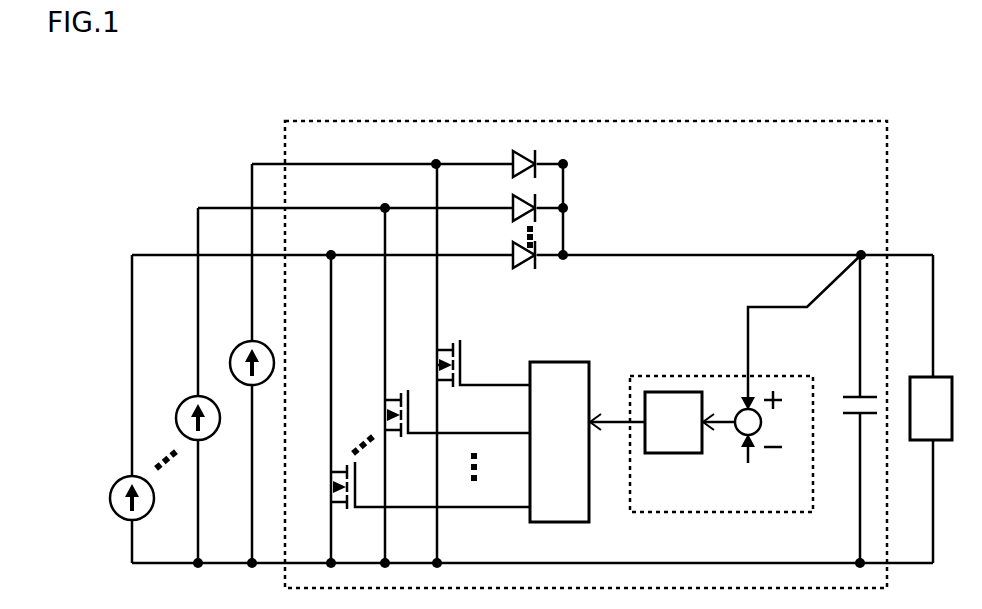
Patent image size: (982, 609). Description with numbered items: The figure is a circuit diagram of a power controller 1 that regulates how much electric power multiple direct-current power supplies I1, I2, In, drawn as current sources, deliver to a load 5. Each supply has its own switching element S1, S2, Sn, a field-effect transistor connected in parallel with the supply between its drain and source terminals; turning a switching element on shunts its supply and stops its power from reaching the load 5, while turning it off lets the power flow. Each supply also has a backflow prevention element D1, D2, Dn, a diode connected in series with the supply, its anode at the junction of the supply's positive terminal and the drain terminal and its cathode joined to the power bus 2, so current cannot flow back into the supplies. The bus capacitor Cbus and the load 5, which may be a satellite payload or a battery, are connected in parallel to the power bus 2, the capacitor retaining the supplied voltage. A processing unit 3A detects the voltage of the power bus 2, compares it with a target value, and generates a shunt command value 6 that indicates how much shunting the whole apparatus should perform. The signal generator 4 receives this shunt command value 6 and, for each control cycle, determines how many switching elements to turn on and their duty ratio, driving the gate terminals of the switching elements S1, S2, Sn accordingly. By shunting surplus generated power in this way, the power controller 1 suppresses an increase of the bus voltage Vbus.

The power controller 1 is at (287, 163).
The power bus 2 is at (702, 257).
The processing unit 3A is at (725, 386).
The signal generator 4 is at (540, 362).
The load 5 is at (925, 378).
The shunt command value 6 is at (618, 420).
The backflow prevention element D1 is at (498, 153).
The backflow prevention element D2 is at (498, 197).
The backflow prevention element Dn is at (498, 244).
The switching element S1 is at (434, 365).
The switching element S2 is at (382, 413).
The switching element Sn is at (326, 482).
The DC power supply I1 is at (243, 342).
The DC power supply I2 is at (182, 398).
The DC power supply In is at (117, 478).
The bus voltage Vbus is at (857, 253).
The bus capacitor Cbus is at (855, 393).